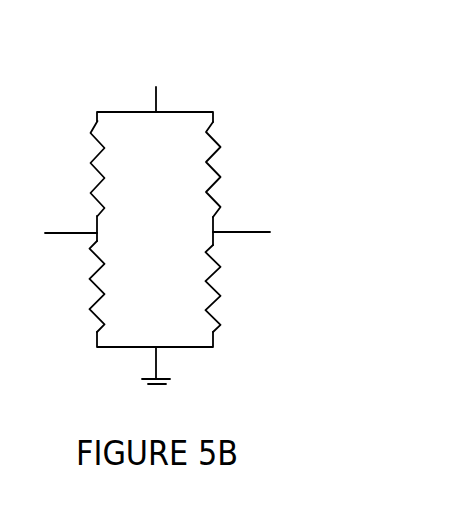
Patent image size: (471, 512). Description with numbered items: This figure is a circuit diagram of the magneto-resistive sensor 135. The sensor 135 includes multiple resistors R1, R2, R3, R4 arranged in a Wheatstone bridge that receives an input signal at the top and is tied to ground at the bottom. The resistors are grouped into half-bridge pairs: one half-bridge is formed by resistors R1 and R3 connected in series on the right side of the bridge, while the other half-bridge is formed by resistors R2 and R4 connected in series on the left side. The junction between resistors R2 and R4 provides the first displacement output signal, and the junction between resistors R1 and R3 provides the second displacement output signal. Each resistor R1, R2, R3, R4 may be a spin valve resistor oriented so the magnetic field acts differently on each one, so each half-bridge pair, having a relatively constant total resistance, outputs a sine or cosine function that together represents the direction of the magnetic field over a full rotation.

The sensor 135 is at (160, 197).
The resistor R1 is at (199, 169).
The resistor R2 is at (111, 168).
The resistor R3 is at (199, 288).
The resistor R4 is at (110, 286).